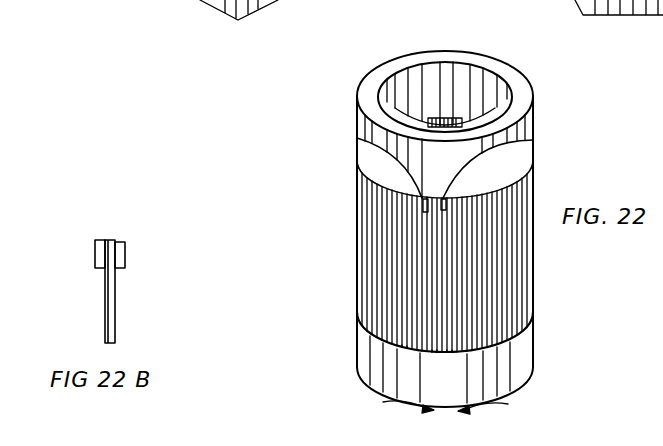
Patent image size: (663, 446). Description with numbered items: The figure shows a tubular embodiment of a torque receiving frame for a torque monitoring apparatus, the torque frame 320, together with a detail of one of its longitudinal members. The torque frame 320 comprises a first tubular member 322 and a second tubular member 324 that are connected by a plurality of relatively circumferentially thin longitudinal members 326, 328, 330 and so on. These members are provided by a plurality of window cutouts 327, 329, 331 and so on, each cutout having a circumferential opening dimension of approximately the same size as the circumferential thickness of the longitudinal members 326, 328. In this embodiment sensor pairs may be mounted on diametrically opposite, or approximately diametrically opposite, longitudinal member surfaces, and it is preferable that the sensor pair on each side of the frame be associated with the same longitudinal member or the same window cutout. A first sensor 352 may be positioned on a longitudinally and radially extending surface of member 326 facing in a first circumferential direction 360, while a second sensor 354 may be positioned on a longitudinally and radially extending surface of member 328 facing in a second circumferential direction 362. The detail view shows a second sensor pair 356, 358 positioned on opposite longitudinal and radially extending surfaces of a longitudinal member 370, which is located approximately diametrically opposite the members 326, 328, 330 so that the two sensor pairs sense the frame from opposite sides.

In FIG. 22, the torque frame 320 is at (357, 106).
In FIG. 22, the first tubular member 322 is at (528, 357).
In FIG. 22, the second tubular member 324 is at (532, 114).
In FIG. 22, the longitudinal member 326 is at (425, 235).
In FIG. 22, the window cutout 327 is at (423, 312).
In FIG. 22, the longitudinal member 328 is at (433, 262).
In FIG. 22, the window cutout 329 is at (438, 318).
In FIG. 22, the longitudinal member 330 is at (443, 283).
In FIG. 22, the window cutout 331 is at (450, 330).
In FIG. 22, the first sensor 352 is at (357, 138).
In FIG. 22, the second sensor 354 is at (533, 141).
In FIG. 22, the second sensor pair sensor 356 is at (438, 122).
In FIG. 22B, the second sensor pair sensor 356 is at (95, 258).
In FIG. 22, the second sensor pair sensor 358 is at (444, 122).
In FIG. 22B, the second sensor pair sensor 358 is at (125, 257).
In FIG. 22, the first circumferential direction 360 is at (394, 412).
In FIG. 22, the second circumferential direction 362 is at (503, 412).
In FIG. 22, the longitudinal member 370 is at (441, 120).
In FIG. 22B, the longitudinal member 370 is at (108, 240).